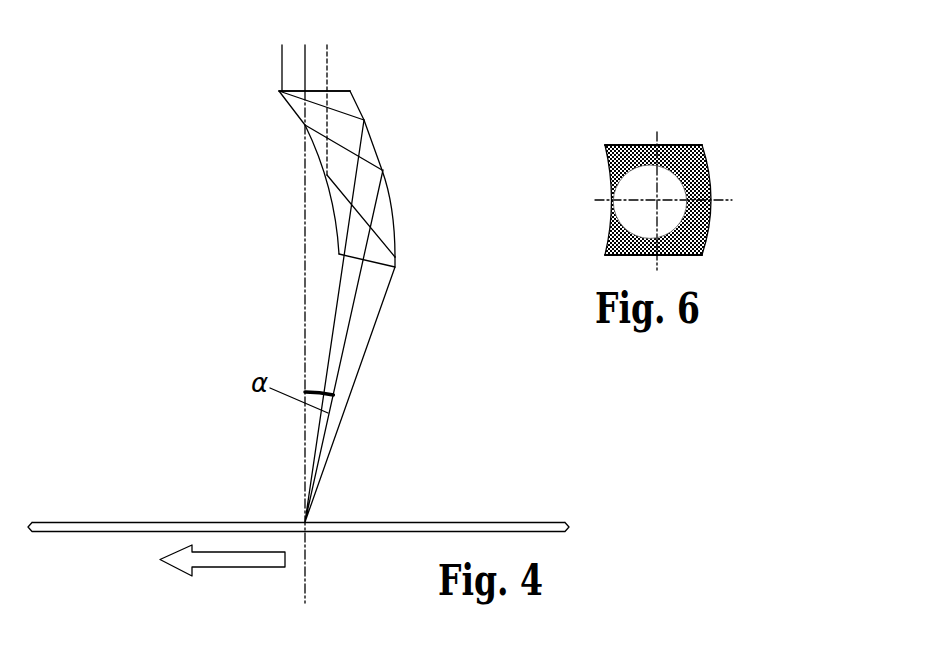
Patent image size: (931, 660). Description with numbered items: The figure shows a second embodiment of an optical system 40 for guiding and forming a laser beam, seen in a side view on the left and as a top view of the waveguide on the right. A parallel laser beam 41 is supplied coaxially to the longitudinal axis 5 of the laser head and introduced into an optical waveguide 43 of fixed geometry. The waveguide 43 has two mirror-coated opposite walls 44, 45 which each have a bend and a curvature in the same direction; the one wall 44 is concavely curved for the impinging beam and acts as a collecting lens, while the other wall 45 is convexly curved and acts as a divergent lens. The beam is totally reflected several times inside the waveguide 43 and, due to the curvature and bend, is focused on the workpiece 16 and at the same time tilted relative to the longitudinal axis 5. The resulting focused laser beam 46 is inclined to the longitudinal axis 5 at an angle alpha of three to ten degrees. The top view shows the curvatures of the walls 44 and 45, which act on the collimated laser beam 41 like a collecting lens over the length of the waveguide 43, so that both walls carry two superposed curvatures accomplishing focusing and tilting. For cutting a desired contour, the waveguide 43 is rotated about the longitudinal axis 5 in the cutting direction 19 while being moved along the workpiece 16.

In FIG. 4, the longitudinal axis 5 is at (305, 567).
In FIG. 4, the workpiece 16 is at (488, 528).
In FIG. 4, the cutting direction 19 is at (219, 568).
In FIG. 4, the optical system 40 is at (280, 278).
In FIG. 4, the parallel laser beam 41 is at (290, 66).
In FIG. 6, the parallel laser beam 41 is at (645, 176).
In FIG. 4, the optical waveguide 43 is at (342, 164).
In FIG. 6, the optical waveguide 43 is at (653, 164).
In FIG. 4, the concavely curved wall 44 is at (391, 199).
In FIG. 6, the concavely curved wall 44 is at (710, 225).
In FIG. 4, the convexly curved wall 45 is at (322, 167).
In FIG. 6, the convexly curved wall 45 is at (607, 176).
In FIG. 4, the focused laser beam 46 is at (337, 373).